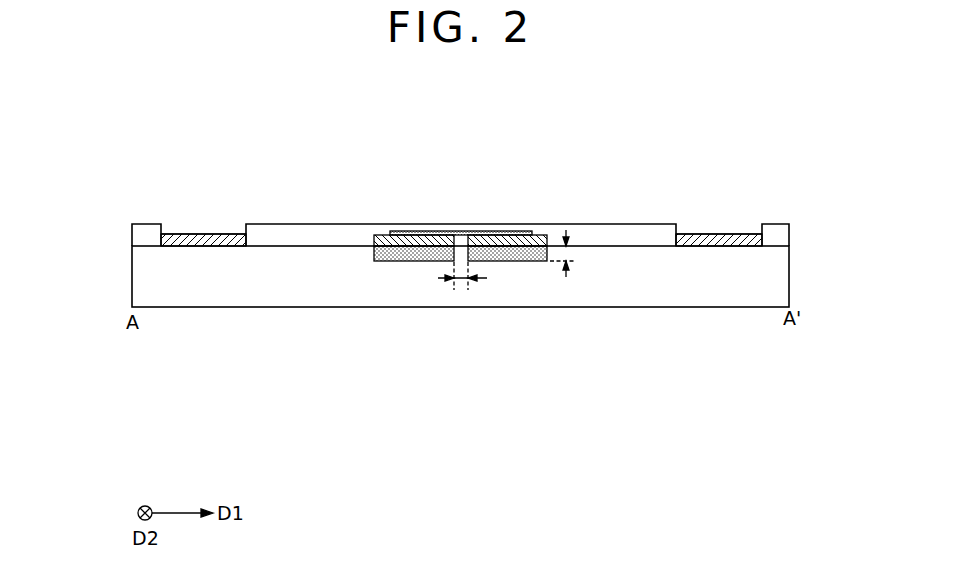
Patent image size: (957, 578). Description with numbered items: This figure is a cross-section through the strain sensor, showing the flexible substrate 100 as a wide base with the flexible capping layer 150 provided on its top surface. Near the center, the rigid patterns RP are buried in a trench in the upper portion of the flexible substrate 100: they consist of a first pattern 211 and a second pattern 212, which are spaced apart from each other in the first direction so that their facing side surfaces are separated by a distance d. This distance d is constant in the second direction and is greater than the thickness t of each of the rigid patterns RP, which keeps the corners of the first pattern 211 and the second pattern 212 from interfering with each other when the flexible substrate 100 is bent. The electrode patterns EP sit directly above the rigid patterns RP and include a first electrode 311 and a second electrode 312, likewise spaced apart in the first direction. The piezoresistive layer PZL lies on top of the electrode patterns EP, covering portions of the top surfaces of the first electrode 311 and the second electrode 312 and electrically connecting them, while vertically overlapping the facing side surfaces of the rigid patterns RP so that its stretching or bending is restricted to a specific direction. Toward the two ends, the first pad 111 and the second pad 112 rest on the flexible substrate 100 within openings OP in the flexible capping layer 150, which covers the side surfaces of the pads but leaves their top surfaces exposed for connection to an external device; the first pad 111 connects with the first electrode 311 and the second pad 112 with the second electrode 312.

The flexible substrate 100 is at (778, 273).
The flexible capping layer 150 is at (780, 232).
The first pad 111 is at (203, 240).
The second pad 112 is at (722, 240).
The first pattern 211 is at (413, 257).
The second pattern 212 is at (505, 257).
The first electrode 311 is at (437, 237).
The second electrode 312 is at (488, 237).
The piezoresistive layer PZL is at (405, 231).
The electrode patterns EP is at (503, 157).
The rigid patterns RP is at (528, 372).
The openings OP is at (163, 229).
The thickness t is at (566, 253).
The distance d is at (462, 283).